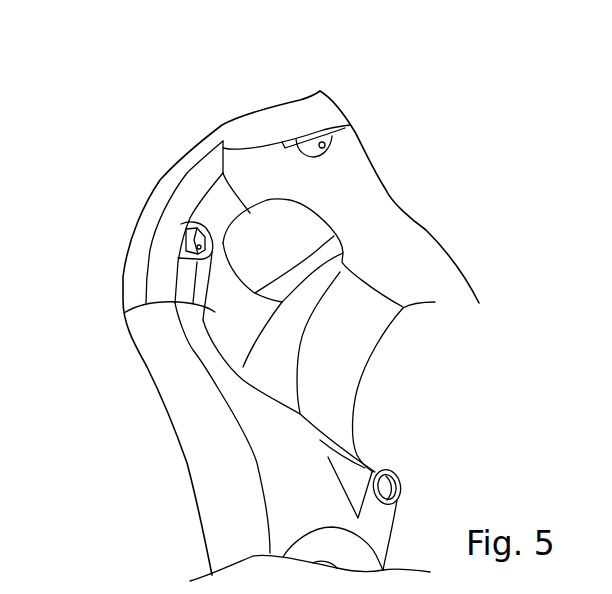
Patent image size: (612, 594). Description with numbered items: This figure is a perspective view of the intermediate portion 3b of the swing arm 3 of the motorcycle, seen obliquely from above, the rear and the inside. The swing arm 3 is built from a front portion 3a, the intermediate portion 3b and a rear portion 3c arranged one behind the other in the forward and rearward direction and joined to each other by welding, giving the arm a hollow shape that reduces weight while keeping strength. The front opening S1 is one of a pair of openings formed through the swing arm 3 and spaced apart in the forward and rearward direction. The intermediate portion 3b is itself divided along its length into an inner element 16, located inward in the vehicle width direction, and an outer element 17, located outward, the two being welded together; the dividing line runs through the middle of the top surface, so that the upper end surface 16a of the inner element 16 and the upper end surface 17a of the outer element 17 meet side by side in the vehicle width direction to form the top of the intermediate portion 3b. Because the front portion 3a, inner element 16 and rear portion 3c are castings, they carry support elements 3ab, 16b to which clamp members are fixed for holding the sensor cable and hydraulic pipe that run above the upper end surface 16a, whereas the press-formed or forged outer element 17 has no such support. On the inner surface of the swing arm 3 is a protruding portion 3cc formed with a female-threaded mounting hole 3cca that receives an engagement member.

The swing arm 3 is at (224, 126).
The front portion 3a is at (277, 122).
The intermediate portion 3b is at (182, 157).
The support element 3ab is at (332, 142).
The rear portion 3c is at (200, 465).
The protruding portion 3cc is at (375, 467).
The mounting hole 3cca is at (397, 471).
The inner element 16 is at (157, 283).
The upper end surface of the inner element 16a is at (160, 249).
The support element 16b is at (193, 303).
The outer element 17 is at (170, 188).
The upper end surface of the outer element 17a is at (145, 220).
The front opening S1 is at (283, 245).